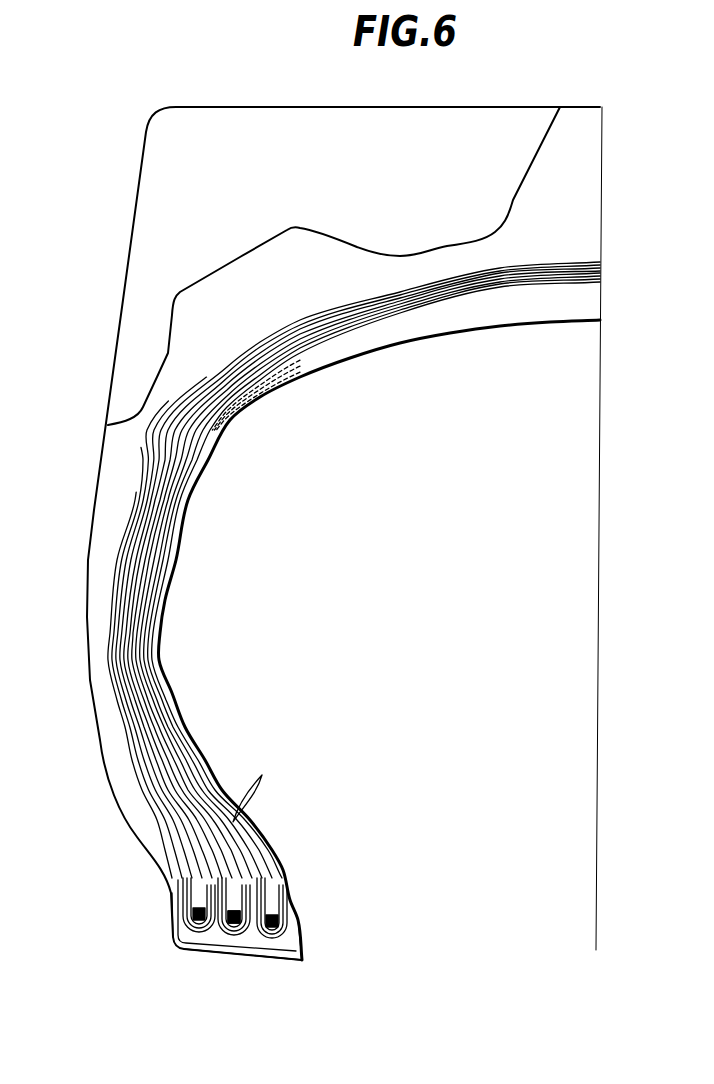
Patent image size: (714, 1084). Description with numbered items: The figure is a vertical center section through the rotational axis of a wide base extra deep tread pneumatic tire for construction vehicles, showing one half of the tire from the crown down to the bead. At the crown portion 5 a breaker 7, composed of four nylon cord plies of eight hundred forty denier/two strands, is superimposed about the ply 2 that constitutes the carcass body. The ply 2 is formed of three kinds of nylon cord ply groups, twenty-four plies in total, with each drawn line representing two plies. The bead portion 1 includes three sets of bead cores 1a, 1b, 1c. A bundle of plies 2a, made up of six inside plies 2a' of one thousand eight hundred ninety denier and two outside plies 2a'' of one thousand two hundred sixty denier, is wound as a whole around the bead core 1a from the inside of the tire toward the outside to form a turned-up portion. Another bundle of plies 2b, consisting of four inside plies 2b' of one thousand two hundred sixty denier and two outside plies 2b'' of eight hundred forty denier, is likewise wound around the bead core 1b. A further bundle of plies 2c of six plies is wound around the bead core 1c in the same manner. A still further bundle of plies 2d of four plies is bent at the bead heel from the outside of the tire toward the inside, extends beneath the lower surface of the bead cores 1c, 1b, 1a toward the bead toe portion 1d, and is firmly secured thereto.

The crown portion 5 is at (493, 127).
The breaker 7 is at (555, 263).
The ply 2 is at (138, 627).
The bundle of plies 2d is at (128, 763).
The inside plies 2a' is at (261, 783).
The outside plies 2a'' is at (278, 858).
The outside plies 2b'' is at (290, 879).
The bundle of plies 2b is at (182, 900).
The bundle of plies 2c is at (209, 937).
The inside plies 2b' is at (259, 940).
The bundle of plies 2a is at (310, 908).
The bead portion 1 is at (183, 946).
The bead core 1a is at (293, 962).
The bead core 1b is at (237, 932).
The bead core 1c is at (170, 927).
The bead toe portion 1d is at (293, 944).